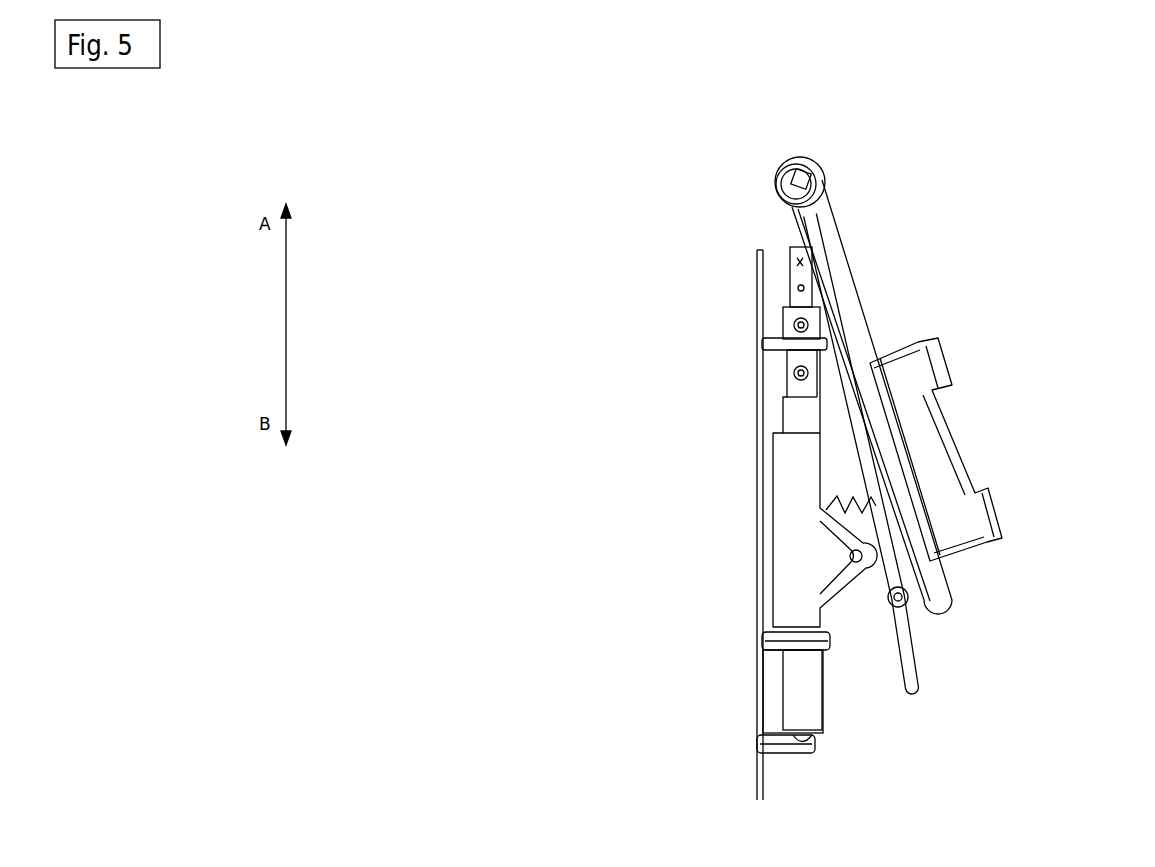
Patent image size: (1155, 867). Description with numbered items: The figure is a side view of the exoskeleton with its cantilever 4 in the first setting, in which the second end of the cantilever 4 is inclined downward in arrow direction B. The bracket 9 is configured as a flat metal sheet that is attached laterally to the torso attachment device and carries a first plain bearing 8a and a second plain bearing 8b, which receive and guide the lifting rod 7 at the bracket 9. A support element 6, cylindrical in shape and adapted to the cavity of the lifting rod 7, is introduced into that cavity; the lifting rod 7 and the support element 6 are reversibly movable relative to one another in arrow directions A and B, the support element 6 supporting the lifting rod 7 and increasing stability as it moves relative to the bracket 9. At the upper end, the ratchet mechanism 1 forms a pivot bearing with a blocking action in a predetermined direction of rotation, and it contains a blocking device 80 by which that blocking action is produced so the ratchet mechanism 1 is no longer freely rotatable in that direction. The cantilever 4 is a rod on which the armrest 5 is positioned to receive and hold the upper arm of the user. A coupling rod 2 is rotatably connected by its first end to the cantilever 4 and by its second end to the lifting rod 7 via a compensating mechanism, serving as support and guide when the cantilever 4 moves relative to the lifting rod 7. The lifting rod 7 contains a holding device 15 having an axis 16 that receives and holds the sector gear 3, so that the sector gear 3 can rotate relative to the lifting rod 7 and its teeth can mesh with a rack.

The ratchet mechanism 1 is at (820, 180).
The coupling rod 2 is at (920, 653).
The sector gear 3 is at (870, 575).
The cantilever 4 is at (840, 243).
The armrest 5 is at (940, 478).
The support element 6 is at (763, 737).
The lifting rod 7 is at (800, 535).
The first plain bearing 8a is at (770, 643).
The second plain bearing 8b is at (827, 338).
The bracket 9 is at (757, 568).
The holding device 15 is at (830, 558).
The axis 16 is at (857, 562).
The blocking device 80 is at (797, 218).